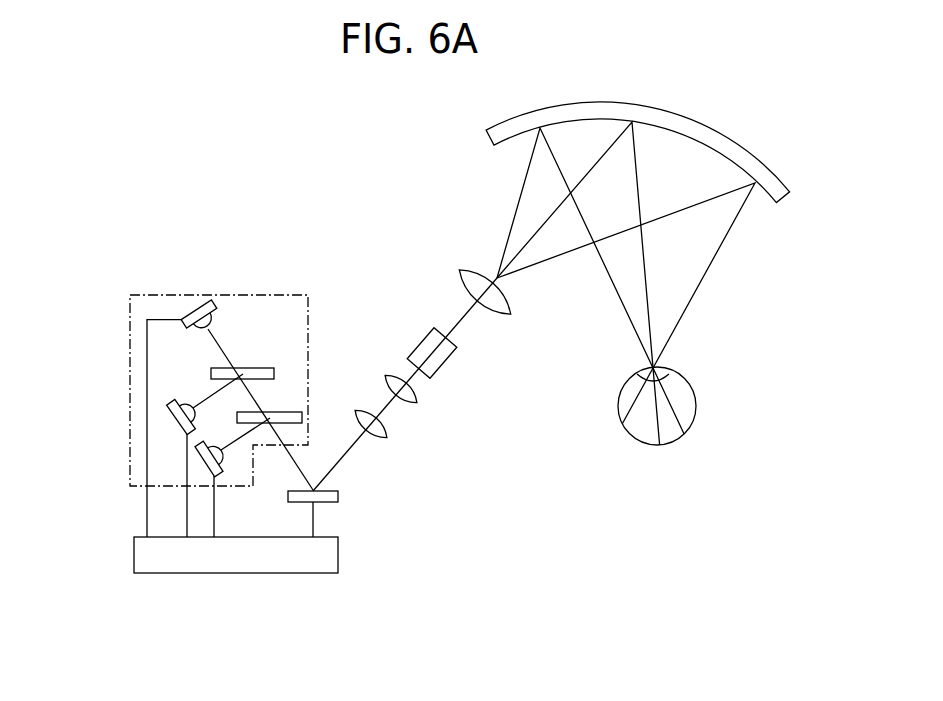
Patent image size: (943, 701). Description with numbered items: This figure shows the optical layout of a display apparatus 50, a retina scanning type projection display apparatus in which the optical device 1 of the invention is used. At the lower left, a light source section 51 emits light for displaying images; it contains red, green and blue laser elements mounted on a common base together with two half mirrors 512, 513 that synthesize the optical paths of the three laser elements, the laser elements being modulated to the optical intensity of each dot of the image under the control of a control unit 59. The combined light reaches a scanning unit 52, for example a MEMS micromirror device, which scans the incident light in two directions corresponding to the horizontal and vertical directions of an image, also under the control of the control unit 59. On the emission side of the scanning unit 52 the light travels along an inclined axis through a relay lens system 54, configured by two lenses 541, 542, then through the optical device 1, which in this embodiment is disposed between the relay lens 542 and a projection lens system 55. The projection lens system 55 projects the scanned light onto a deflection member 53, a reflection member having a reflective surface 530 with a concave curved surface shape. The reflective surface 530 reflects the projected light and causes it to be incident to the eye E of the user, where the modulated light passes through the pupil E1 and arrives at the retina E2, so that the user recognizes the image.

The display apparatus 50 is at (262, 162).
The light source section 51 is at (128, 333).
The half mirror 512 is at (245, 366).
The half mirror 513 is at (283, 411).
The scanning unit 52 is at (338, 498).
The control unit 59 is at (225, 574).
The optical device 1 is at (424, 332).
The relay lens system 54 is at (397, 382).
The relay lens 541 is at (363, 404).
The relay lens 542 is at (392, 370).
The projection lens system 55 is at (534, 310).
The deflection member 53 is at (697, 117).
The reflective surface 530 is at (587, 117).
The eye E is at (685, 417).
The pupil E1 is at (663, 377).
The retina E2 is at (677, 438).